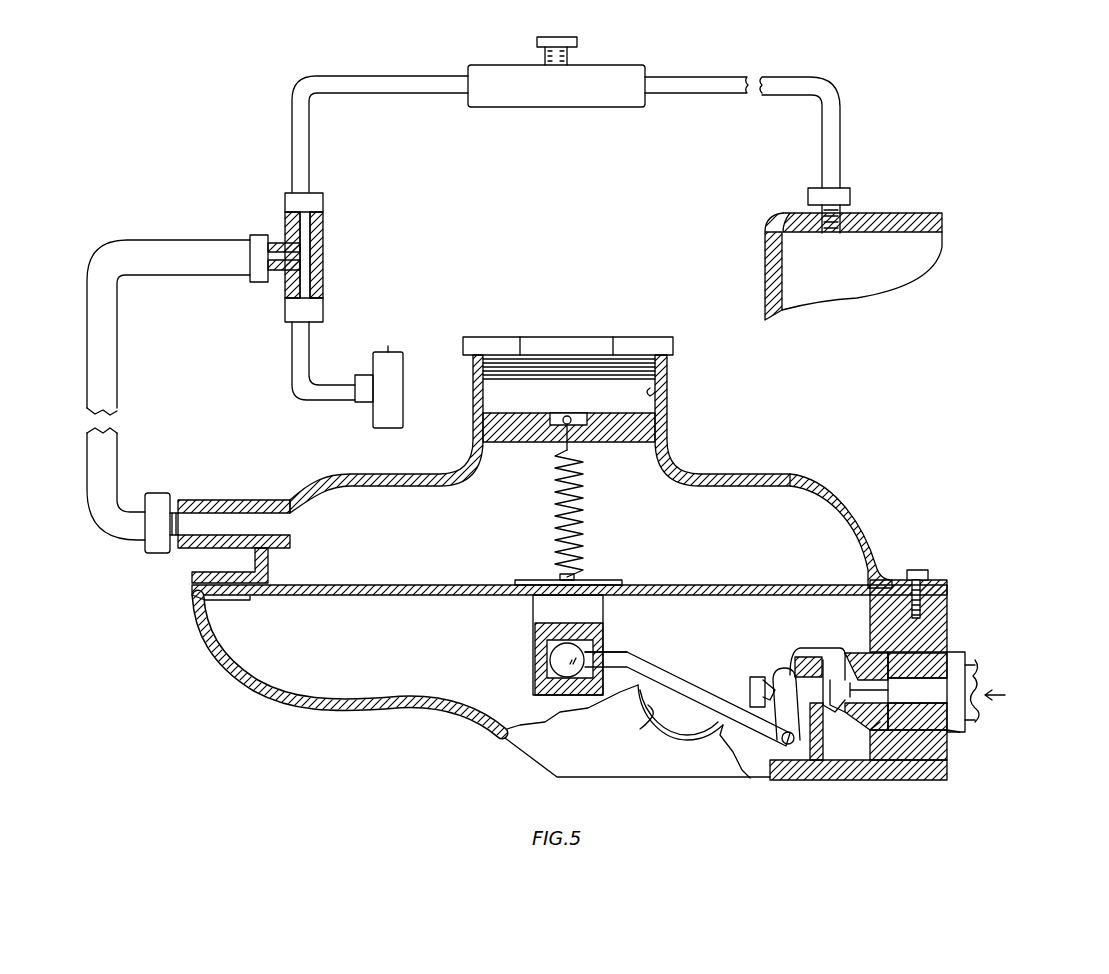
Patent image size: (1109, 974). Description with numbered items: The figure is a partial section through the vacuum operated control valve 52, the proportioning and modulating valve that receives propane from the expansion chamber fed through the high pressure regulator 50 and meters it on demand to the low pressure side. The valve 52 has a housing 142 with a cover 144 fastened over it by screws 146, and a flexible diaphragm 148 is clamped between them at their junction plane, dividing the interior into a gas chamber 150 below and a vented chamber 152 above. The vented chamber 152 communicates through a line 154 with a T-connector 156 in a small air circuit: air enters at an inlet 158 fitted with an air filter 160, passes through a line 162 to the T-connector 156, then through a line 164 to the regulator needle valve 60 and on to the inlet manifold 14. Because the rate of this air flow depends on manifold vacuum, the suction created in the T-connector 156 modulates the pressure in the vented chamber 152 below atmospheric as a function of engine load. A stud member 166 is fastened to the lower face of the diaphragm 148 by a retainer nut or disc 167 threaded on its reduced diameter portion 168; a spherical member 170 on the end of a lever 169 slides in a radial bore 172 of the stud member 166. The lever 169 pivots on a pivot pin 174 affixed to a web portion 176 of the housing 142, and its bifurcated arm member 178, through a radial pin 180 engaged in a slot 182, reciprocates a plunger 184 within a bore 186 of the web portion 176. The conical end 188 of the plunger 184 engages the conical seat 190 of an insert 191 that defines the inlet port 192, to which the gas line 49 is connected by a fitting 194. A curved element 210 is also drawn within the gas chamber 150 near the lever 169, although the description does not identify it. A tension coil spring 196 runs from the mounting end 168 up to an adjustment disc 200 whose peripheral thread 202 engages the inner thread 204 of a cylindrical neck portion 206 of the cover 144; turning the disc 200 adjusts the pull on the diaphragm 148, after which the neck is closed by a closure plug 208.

The inlet manifold 14 is at (768, 268).
The line 49 is at (992, 670).
The high pressure regulator 50 is at (745, 56).
The vacuum operated control valve 52 is at (250, 720).
The regulator needle valve 60 is at (514, 48).
The housing 142 is at (557, 775).
The cover 144 is at (825, 500).
The screws 146 is at (914, 570).
The flexible diaphragm 148 is at (405, 585).
The gas chamber 150 is at (342, 690).
The vented chamber 152 is at (705, 486).
The line 154 is at (128, 530).
The T-connector 156 is at (323, 212).
The inlet 158 is at (403, 386).
The air filter 160 is at (388, 352).
The line 162 is at (309, 348).
The line 164 is at (292, 135).
The stud member 166 is at (535, 620).
The retainer nut or disc 167 is at (514, 580).
The threaded reduced diameter portion 168 is at (575, 578).
The lever 169 is at (686, 658).
The spherical member 170 is at (555, 662).
The radial bore 172 is at (605, 650).
The pivot pin 174 is at (790, 758).
The web portion 176 is at (832, 778).
The bifurcated arm member 178 is at (782, 740).
The radial pin 180 is at (750, 688).
The slot 182 is at (780, 680).
The plunger 184 is at (790, 660).
The bore 186 is at (855, 709).
The conical end 188 is at (847, 630).
The conical seat 190 is at (870, 650).
The insert 191 is at (884, 732).
The inlet port 192 is at (890, 690).
The fitting 194 is at (962, 735).
The tension coil spring 196 is at (555, 506).
The adjustment disc 200 is at (505, 413).
The peripheral thread 202 is at (660, 455).
The inner thread 204 is at (667, 396).
The cylindrical neck portion 206 is at (667, 362).
The closure plug 208 is at (636, 337).
The guide 210 is at (658, 708).